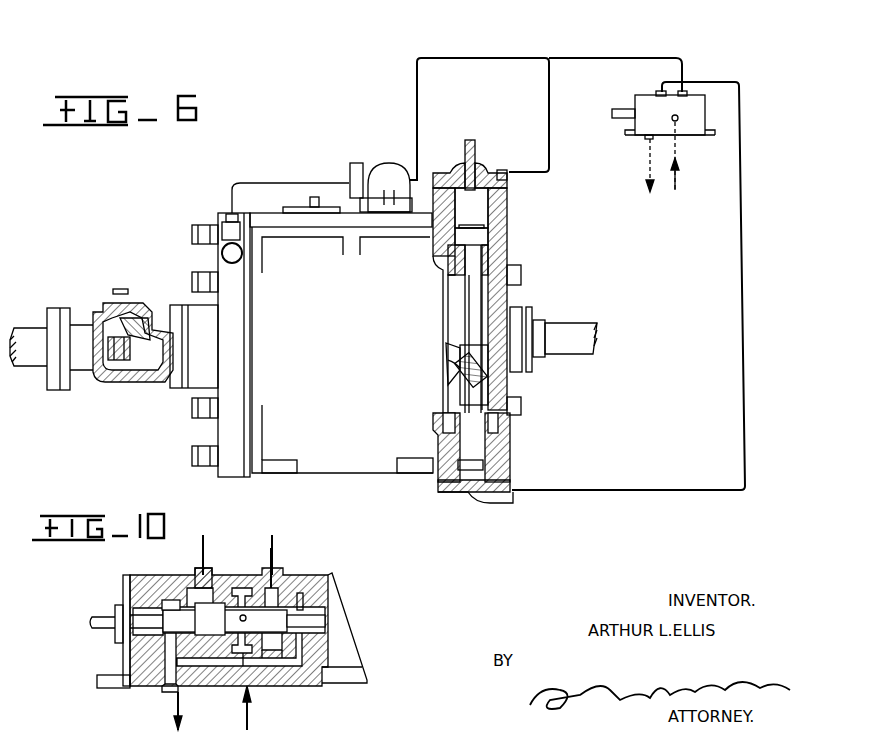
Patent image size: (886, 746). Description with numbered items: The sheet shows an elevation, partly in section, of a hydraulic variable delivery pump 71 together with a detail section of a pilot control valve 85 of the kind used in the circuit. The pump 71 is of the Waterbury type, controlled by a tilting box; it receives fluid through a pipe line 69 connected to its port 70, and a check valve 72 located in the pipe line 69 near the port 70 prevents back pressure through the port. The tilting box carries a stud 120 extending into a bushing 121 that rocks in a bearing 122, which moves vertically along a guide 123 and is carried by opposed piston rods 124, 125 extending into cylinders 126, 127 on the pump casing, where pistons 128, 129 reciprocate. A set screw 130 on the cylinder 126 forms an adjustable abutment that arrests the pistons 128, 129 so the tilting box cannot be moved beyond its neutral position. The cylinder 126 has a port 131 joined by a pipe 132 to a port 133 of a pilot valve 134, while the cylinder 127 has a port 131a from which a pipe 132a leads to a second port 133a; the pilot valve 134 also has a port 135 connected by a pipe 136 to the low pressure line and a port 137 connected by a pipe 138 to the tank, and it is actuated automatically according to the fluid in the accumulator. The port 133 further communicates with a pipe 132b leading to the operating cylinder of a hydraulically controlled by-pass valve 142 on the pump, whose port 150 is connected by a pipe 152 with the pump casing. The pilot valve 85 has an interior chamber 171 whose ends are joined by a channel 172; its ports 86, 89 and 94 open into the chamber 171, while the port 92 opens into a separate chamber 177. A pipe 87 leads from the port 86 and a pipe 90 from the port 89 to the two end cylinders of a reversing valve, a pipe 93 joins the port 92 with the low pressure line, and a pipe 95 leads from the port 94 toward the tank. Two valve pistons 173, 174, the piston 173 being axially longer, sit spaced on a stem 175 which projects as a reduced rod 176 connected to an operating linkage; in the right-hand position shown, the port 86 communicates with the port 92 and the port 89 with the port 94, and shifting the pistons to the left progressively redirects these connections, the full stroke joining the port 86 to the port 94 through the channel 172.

In FIG. 6, the pipe line 69 is at (36, 362).
In FIG. 6, the port 70 is at (194, 346).
In FIG. 6, the hydraulic variable delivery pump 71 is at (312, 337).
In FIG. 6, the check valve 72 is at (146, 310).
In FIG. 6, the stud 120 is at (448, 383).
In FIG. 6, the bushing 121 is at (445, 357).
In FIG. 6, the bearing 122 is at (490, 393).
In FIG. 6, the guide 123 is at (487, 312).
In FIG. 6, the piston rod 124 is at (472, 302).
In FIG. 6, the piston rod 125 is at (476, 446).
In FIG. 6, the cylinder 126 is at (480, 210).
In FIG. 6, the cylinder 127 is at (488, 458).
In FIG. 6, the piston 128 is at (485, 236).
In FIG. 6, the piston 129 is at (466, 495).
In FIG. 6, the set screw 130 is at (476, 158).
In FIG. 6, the port 131 is at (500, 172).
In FIG. 6, the port 131a is at (503, 505).
In FIG. 6, the pipe 132 is at (622, 58).
In FIG. 6, the pipe 132a is at (623, 508).
In FIG. 6, the pipe 132b is at (442, 58).
In FIG. 6, the port 133 is at (688, 92).
In FIG. 6, the port 133a is at (656, 92).
In FIG. 6, the pilot valve 134 is at (690, 116).
In FIG. 6, the port 135 is at (678, 122).
In FIG. 6, the pipe 136 is at (680, 164).
In FIG. 6, the port 137 is at (648, 139).
In FIG. 6, the pipe 138 is at (648, 180).
In FIG. 6, the by-pass valve 142 is at (388, 175).
In FIG. 6, the port 150 is at (356, 175).
In FIG. 6, the pipe 152 is at (304, 183).
In FIG. 10, the pilot valve 85 is at (306, 684).
In FIG. 10, the port 86 is at (283, 575).
In FIG. 10, the pipe 87 is at (272, 538).
In FIG. 10, the port 89 is at (202, 582).
In FIG. 10, the pipe 90 is at (205, 553).
In FIG. 10, the port 92 is at (243, 614).
In FIG. 10, the pipe 93 is at (250, 720).
In FIG. 10, the port 94 is at (172, 690).
In FIG. 10, the pipe 95 is at (182, 712).
In FIG. 10, the interior chamber 171 is at (175, 603).
In FIG. 10, the channel 172 is at (252, 667).
In FIG. 10, the valve piston 173 is at (212, 619).
In FIG. 10, the valve piston 174 is at (292, 623).
In FIG. 10, the stem 175 is at (254, 559).
In FIG. 10, the reduced rod 176 is at (103, 628).
In FIG. 10, the interior chamber 177 is at (245, 667).